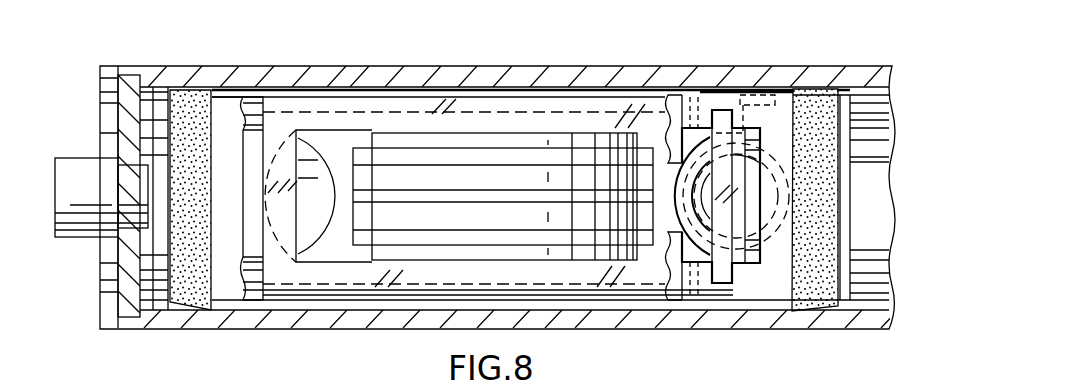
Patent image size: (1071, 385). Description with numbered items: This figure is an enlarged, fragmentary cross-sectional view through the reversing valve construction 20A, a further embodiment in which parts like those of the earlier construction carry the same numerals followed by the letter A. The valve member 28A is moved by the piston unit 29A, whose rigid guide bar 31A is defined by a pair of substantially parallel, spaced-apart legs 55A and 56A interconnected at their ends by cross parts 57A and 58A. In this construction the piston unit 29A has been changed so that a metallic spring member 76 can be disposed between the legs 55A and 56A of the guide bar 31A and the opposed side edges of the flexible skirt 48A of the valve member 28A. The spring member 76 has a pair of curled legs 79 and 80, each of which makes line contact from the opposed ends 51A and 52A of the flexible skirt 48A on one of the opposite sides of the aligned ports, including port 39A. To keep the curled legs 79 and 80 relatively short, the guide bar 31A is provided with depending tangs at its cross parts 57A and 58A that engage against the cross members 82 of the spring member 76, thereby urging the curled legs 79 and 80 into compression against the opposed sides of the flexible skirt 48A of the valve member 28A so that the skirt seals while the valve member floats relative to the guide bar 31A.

The reversing valve construction 20A is at (114, 48).
The cross part of guide bar 57A is at (224, 138).
The end of flexible skirt 51A is at (246, 112).
The metallic spring member 76 is at (366, 107).
The curled leg of spring member 79 is at (443, 107).
The valve member 28A is at (507, 175).
The leg of guide bar 55A is at (705, 103).
The end of flexible skirt 52A is at (758, 95).
The piston unit 29A is at (780, 91).
The cross part of guide bar 58A is at (783, 138).
The cross member of spring member 82 is at (735, 177).
The flexible skirt 48A is at (333, 246).
The curled leg of spring member 80 is at (443, 297).
The guide bar 31A is at (677, 293).
The leg of guide bar 56A is at (704, 277).
The aligned port 39A is at (717, 208).